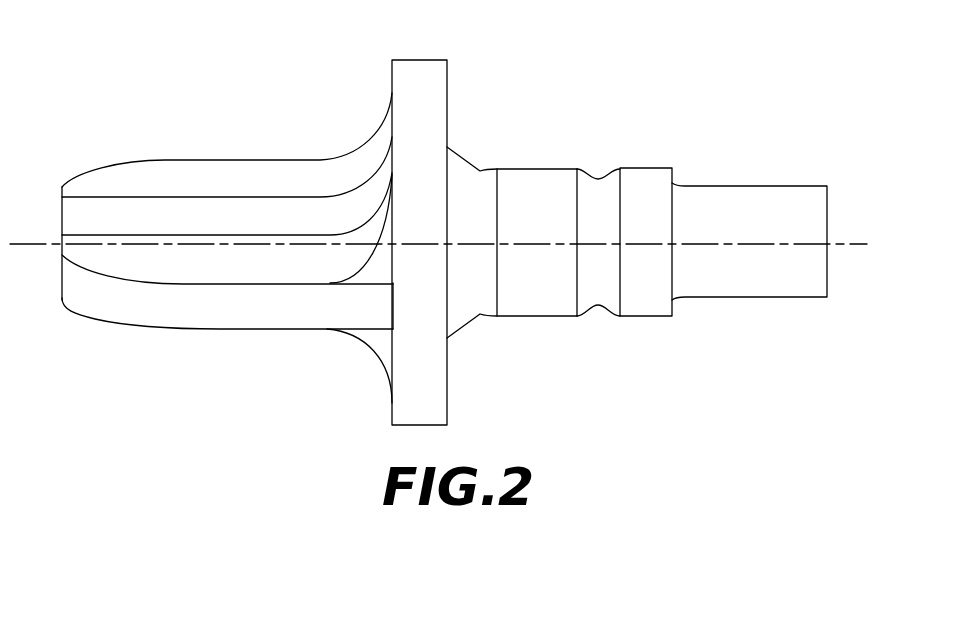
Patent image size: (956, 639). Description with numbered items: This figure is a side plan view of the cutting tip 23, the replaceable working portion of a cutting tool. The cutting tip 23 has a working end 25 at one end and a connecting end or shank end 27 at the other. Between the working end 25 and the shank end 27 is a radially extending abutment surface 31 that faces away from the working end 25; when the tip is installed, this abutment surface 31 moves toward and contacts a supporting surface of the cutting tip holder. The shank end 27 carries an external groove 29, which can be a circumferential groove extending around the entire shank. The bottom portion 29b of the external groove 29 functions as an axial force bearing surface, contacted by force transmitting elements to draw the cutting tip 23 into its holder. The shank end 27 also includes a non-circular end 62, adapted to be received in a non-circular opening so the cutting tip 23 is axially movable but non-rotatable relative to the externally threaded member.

The cutting tip 23 is at (534, 82).
The working end 25 is at (134, 308).
The shank end 27 is at (650, 150).
The external groove 29 is at (598, 168).
The bottom portion of the external groove 29b is at (608, 305).
The abutment surface 31 is at (447, 395).
The non-circular end 62 is at (750, 208).